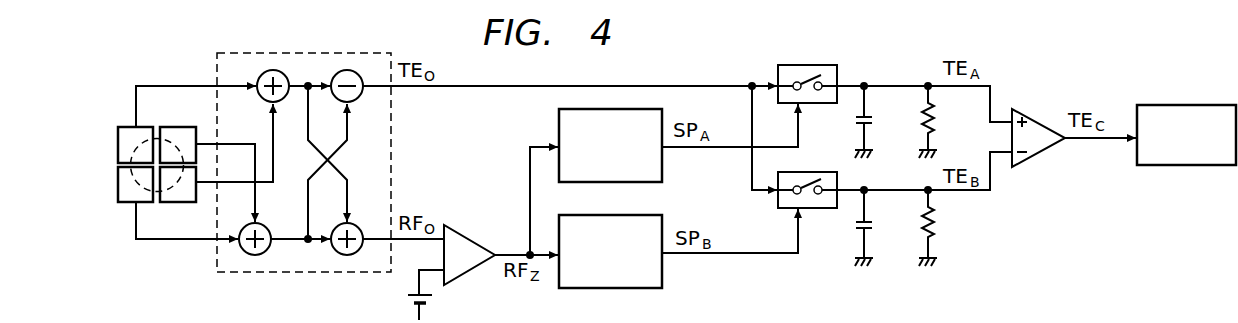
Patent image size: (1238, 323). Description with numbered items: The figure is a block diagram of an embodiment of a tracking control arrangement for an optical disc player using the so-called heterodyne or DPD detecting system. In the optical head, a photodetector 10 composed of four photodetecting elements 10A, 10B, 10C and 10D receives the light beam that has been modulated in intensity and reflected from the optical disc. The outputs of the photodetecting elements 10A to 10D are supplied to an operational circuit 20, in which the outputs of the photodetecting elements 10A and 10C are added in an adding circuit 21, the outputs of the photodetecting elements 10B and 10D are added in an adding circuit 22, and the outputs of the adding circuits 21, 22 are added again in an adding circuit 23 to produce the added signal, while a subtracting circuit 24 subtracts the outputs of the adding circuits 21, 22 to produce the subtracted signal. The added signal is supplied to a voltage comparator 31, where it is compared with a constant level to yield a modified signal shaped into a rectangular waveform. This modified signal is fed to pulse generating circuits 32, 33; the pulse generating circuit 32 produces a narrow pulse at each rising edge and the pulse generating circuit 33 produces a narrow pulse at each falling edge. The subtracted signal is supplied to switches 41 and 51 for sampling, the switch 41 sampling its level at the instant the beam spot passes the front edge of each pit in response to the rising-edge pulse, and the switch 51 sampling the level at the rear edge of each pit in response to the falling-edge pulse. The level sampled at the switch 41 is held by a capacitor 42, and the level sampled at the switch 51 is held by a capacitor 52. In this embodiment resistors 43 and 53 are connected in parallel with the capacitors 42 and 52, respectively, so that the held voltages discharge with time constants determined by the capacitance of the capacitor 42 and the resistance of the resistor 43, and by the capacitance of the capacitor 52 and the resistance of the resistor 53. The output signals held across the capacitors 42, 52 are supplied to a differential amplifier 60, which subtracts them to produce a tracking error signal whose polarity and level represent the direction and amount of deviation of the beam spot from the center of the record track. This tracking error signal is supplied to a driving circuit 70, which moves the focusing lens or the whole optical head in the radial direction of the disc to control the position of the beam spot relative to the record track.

The photodetector 10 is at (147, 165).
The photodetecting element 10A is at (131, 127).
The photodetecting element 10B is at (129, 203).
The photodetecting element 10C is at (183, 203).
The photodetecting element 10D is at (183, 127).
The operational circuit 20 is at (287, 176).
The adding circuit 21 is at (262, 100).
The adding circuit 22 is at (265, 228).
The adding circuit 23 is at (355, 226).
The subtracting circuit 24 is at (361, 96).
The voltage comparator 31 is at (466, 272).
The pulse generating circuit 32 is at (663, 165).
The pulse generating circuit 33 is at (663, 272).
The switch 41 is at (818, 105).
The capacitor 42 is at (872, 119).
The resistor 43 is at (935, 118).
The switch 51 is at (778, 209).
The capacitor 52 is at (857, 226).
The resistor 53 is at (938, 223).
The differential amplifier 60 is at (1045, 148).
The driving circuit 70 is at (1176, 166).